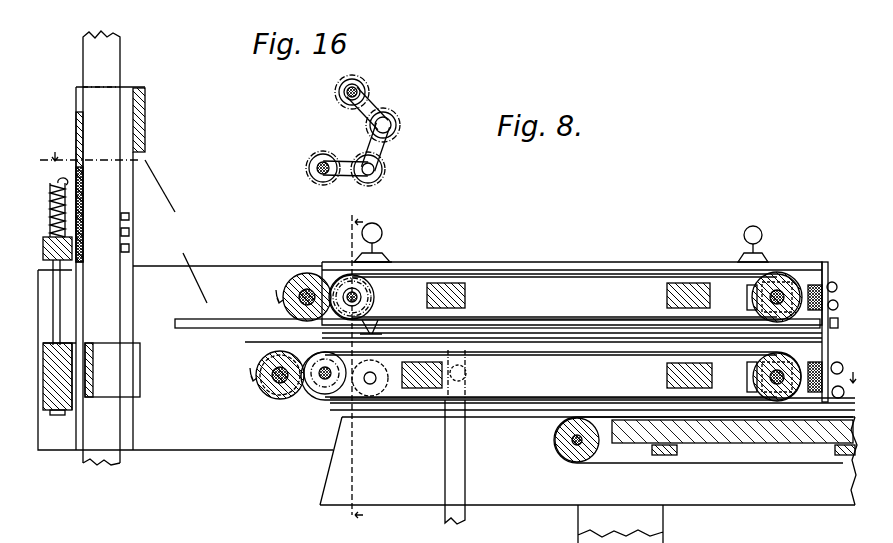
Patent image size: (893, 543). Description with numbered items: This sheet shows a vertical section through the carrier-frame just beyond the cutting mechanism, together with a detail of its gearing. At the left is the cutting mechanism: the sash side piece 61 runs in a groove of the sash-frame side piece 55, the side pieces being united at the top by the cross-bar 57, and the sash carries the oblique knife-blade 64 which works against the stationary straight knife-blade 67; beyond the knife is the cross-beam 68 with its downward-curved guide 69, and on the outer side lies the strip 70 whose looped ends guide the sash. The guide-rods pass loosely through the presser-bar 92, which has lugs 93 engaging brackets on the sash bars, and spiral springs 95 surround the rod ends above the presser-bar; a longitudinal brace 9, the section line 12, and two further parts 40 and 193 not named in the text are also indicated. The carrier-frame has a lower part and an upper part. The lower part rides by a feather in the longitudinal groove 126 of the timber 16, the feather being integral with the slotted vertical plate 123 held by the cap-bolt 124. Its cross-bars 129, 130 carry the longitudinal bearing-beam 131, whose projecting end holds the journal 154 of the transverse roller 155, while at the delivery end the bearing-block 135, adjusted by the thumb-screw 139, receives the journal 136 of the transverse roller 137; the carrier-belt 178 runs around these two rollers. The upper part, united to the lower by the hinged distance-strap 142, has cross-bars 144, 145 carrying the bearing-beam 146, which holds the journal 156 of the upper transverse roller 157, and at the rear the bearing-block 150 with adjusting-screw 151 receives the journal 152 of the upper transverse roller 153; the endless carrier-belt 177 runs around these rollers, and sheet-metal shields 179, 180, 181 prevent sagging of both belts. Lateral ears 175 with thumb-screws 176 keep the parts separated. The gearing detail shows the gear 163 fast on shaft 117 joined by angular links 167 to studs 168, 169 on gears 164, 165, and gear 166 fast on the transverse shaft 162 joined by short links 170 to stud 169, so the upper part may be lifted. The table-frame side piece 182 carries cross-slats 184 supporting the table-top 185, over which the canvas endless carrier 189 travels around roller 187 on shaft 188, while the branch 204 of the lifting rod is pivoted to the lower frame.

In FIG. 8, the longitudinal brace 9 is at (90, 159).
In FIG. 8, the section line 12 is at (352, 368).
In FIG. 8, the timber 16 is at (221, 268).
In FIG. 8, the rod 40 is at (61, 308).
In FIG. 8, the sash-frame side piece 55 is at (122, 438).
In FIG. 8, the cross-bar 57 is at (145, 128).
In FIG. 8, the sash side piece 61 is at (101, 248).
In FIG. 8, the oblique-disposed knife-blade 64 is at (84, 166).
In FIG. 8, the stationary straight knife-blade 67 is at (74, 406).
In FIG. 8, the cross-beam 68 is at (56, 416).
In FIG. 8, the downward-curved guide 69 is at (62, 340).
In FIG. 8, the strip 70 is at (112, 370).
In FIG. 8, the presser-bar 92 is at (73, 249).
In FIG. 8, the lug 93 is at (84, 228).
In FIG. 8, the spiral spring 95 is at (67, 205).
In FIG. 16, the shaft 117 is at (316, 168).
In FIG. 8, the shaft 117 is at (324, 380).
In FIG. 8, the vertical plate 123 is at (838, 306).
In FIG. 8, the cap-bolt 124 is at (836, 328).
In FIG. 8, the longitudinal groove 126 is at (214, 330).
In FIG. 8, the cross-bar 129 is at (422, 389).
In FIG. 8, the cross-bar 130 is at (666, 376).
In FIG. 8, the longitudinal bearing-beam 131 is at (551, 376).
In FIG. 8, the bearing-block 135 is at (787, 373).
In FIG. 8, the journal 136 is at (747, 380).
In FIG. 8, the transverse roller 137 is at (778, 432).
In FIG. 8, the adjusting thumb-screw 139 is at (845, 361).
In FIG. 8, the hinged distance-strap 142 is at (625, 333).
In FIG. 8, the cross-bar 144 is at (444, 283).
In FIG. 8, the cross-bar 145 is at (672, 283).
In FIG. 8, the longitudinal bearing-beam 146 is at (530, 300).
In FIG. 8, the bearing-block 150 is at (815, 268).
In FIG. 8, the adjusting-screw 151 is at (836, 285).
In FIG. 8, the journal 152 is at (779, 285).
In FIG. 8, the upper transverse roller 153 is at (793, 272).
In FIG. 8, the journal 154 is at (276, 399).
In FIG. 8, the transverse roller 155 is at (262, 393).
In FIG. 8, the journal 156 is at (337, 279).
In FIG. 8, the upper transverse roller 157 is at (292, 276).
In FIG. 16, the transverse shaft 162 is at (364, 92).
In FIG. 8, the transverse shaft 162 is at (348, 288).
In FIG. 16, the gear 163 is at (322, 152).
In FIG. 8, the gear 163 is at (315, 392).
In FIG. 16, the gear 164 is at (383, 165).
In FIG. 8, the gear 164 is at (366, 396).
In FIG. 16, the gear 165 is at (400, 122).
In FIG. 8, the gear 165 is at (457, 374).
In FIG. 16, the gear 166 is at (363, 80).
In FIG. 8, the gear 166 is at (376, 272).
In FIG. 16, the angular link 167 is at (383, 139).
In FIG. 8, the angular link 167 is at (384, 318).
In FIG. 16, the stud 168 is at (383, 171).
In FIG. 16, the stud 169 is at (392, 112).
In FIG. 16, the short link 170 is at (368, 104).
In FIG. 8, the short link 170 is at (378, 296).
In FIG. 8, the lateral ear 175 is at (386, 260).
In FIG. 8, the thumb-screw 176 is at (373, 222).
In FIG. 8, the endless carrier-belt 177 is at (508, 266).
In FIG. 8, the carrier-belt 178 is at (533, 331).
In FIG. 8, the sheet-metal shield 179 is at (588, 272).
In FIG. 8, the sheet-metal shield 180 is at (582, 322).
In FIG. 8, the sheet-metal shield 181 is at (718, 352).
In FIG. 8, the table-frame side piece 182 is at (498, 500).
In FIG. 8, the cross-slat 184 is at (666, 456).
In FIG. 8, the table-top 185 is at (740, 444).
In FIG. 8, the roller 187 is at (555, 436).
In FIG. 8, the shaft 188 is at (566, 457).
In FIG. 8, the canvas endless carrier 189 is at (618, 463).
In FIG. 8, the knob 193 is at (847, 396).
In FIG. 8, the branch 204 is at (470, 480).